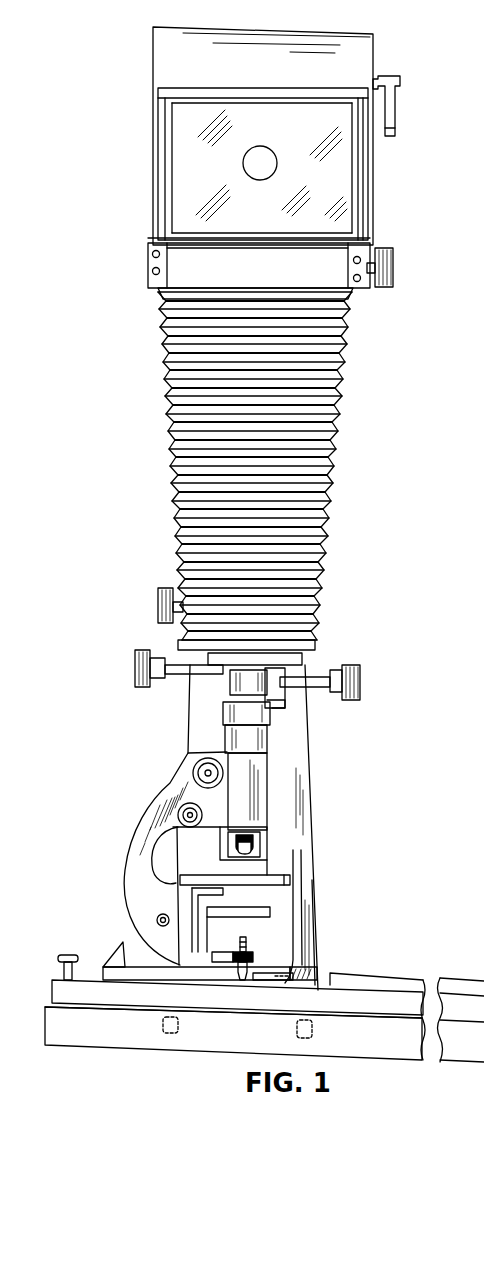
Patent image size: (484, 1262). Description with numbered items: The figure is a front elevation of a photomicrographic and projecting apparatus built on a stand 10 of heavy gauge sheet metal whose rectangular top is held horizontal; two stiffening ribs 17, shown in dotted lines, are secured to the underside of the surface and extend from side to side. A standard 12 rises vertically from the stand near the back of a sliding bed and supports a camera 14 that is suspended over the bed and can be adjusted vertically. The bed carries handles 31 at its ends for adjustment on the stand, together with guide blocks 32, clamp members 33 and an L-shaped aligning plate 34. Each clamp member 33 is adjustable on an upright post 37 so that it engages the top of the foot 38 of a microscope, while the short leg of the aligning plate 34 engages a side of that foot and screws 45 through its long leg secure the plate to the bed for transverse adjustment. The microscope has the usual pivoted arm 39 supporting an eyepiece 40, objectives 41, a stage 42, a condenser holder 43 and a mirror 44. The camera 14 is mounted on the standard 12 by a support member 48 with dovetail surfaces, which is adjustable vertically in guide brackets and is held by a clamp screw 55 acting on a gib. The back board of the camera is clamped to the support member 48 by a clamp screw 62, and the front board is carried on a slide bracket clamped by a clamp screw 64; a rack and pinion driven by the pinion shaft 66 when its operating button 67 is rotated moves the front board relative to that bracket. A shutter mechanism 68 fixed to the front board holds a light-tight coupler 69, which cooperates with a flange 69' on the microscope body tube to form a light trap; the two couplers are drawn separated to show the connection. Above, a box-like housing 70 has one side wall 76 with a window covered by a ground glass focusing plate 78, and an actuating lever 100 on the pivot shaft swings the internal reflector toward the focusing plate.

The stand 10 is at (138, 1052).
The standard 12 is at (314, 778).
The camera 14 is at (341, 418).
The stiffening ribs 17 is at (180, 1028).
The handles 31 is at (67, 955).
The guide blocks 32 is at (396, 975).
The clamp members 33 is at (250, 968).
The aligning plate 34 is at (317, 983).
The upright post 37 is at (249, 943).
The base or foot 38 is at (310, 893).
The pivoted arm 39 is at (130, 855).
The eyepiece 40 is at (228, 710).
The objectives 41 is at (246, 848).
The stage 42 is at (284, 873).
The condenser holder 43 is at (238, 912).
The mirror 44 is at (217, 952).
The screws 45 is at (304, 958).
The support member 48 is at (280, 694).
The clamp screw 55 is at (158, 605).
The clamp screw 62 is at (393, 260).
The clamp screw 64 is at (360, 673).
The pinion shaft 66 is at (176, 665).
The operating button 67 is at (136, 672).
The shutter mechanism 68 is at (320, 660).
The light-tight coupler 69 is at (207, 689).
The flange 69' is at (311, 723).
The housing 70 is at (266, 163).
The side wall 76 is at (357, 78).
The ground glass focusing plate 78 is at (330, 182).
The actuating lever 100 is at (395, 125).